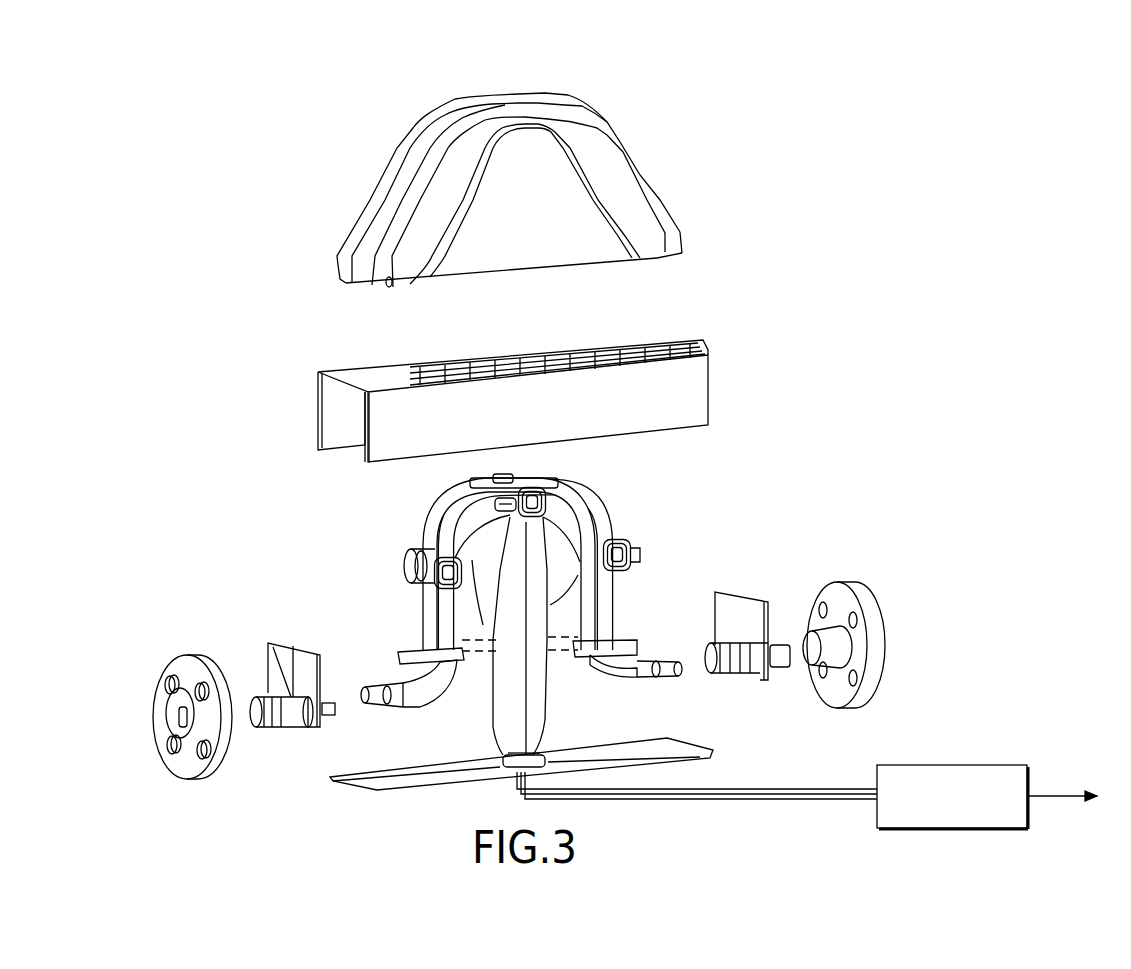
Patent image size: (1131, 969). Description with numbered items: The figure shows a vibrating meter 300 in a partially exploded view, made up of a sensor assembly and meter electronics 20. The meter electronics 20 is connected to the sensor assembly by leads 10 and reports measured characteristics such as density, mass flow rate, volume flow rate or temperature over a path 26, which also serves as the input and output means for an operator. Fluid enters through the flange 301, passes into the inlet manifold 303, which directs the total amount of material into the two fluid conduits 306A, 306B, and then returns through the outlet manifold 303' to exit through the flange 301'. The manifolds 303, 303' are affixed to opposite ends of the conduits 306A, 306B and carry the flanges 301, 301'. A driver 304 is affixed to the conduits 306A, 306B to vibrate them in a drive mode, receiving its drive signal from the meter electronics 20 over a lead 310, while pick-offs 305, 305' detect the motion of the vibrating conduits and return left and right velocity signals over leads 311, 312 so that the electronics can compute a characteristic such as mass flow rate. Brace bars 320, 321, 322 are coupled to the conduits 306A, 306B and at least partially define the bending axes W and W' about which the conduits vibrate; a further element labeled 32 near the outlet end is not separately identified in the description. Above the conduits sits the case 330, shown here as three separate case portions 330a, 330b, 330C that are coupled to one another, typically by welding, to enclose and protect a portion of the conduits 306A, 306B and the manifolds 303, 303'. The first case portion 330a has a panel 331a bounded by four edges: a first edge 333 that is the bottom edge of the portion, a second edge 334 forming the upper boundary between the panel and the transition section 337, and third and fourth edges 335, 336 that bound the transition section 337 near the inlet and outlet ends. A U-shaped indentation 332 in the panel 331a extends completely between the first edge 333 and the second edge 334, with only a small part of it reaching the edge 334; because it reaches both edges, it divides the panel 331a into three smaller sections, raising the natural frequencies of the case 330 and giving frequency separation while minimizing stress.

The vibrating meter 300 is at (1022, 346).
The case 330 is at (758, 254).
The first case portion 330a is at (665, 217).
The case portion 330b is at (697, 388).
The case portion 330C is at (710, 757).
The panel 331a is at (415, 247).
The indentation 332 is at (518, 235).
The first edge 333 is at (593, 266).
The second edge 334 is at (528, 106).
The third edge 335 is at (390, 287).
The fourth edge 336 is at (662, 257).
The transition section 337 is at (384, 194).
The flange 301 is at (186, 693).
The flange 301' is at (861, 624).
The inlet manifold 303 is at (292, 656).
The outlet manifold 303' is at (753, 613).
The driver 304 is at (540, 518).
The pick-off 305 is at (405, 561).
The pick-off 305' is at (638, 536).
The fluid conduit 306A is at (592, 500).
The fluid conduit 306B is at (428, 599).
The lead 310 is at (505, 572).
The lead 311 is at (478, 572).
The lead 312 is at (560, 585).
The brace bar 320 is at (437, 707).
The brace bar 321 is at (420, 657).
The brace bar 322 is at (630, 630).
The outlet manifold 32 is at (623, 677).
The meter electronics 20 is at (1008, 765).
The path 26 is at (1062, 783).
The leads 10 is at (830, 782).